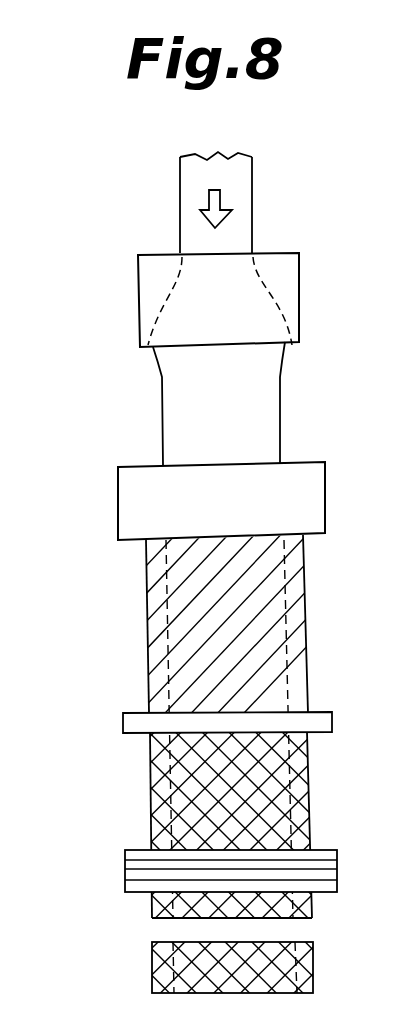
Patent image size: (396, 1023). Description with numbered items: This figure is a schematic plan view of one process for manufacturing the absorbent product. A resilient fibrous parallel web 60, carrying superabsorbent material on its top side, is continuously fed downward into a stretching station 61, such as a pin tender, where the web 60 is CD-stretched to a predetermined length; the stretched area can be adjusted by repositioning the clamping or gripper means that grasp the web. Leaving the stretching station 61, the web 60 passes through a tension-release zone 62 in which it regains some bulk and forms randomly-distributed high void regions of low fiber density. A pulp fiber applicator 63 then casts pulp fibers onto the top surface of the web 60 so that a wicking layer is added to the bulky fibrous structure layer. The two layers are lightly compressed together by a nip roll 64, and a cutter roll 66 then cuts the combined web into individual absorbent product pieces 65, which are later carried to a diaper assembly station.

The resilient fibrous parallel web 60 is at (252, 183).
The stretching station 61 is at (299, 293).
The tension-release zone 62 is at (310, 342).
The pulp fiber applicator 63 is at (119, 502).
The nip roll 64 is at (123, 722).
The individual absorbent product pieces 65 is at (152, 963).
The cutter roll 66 is at (125, 872).